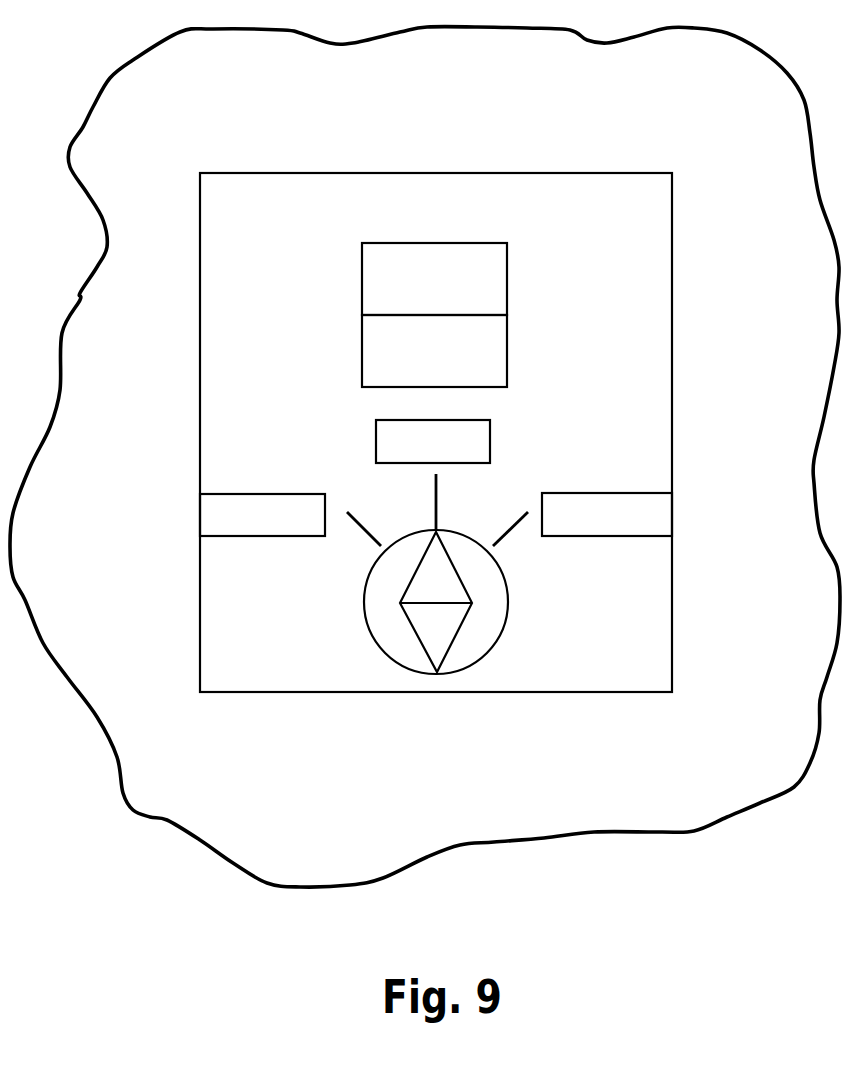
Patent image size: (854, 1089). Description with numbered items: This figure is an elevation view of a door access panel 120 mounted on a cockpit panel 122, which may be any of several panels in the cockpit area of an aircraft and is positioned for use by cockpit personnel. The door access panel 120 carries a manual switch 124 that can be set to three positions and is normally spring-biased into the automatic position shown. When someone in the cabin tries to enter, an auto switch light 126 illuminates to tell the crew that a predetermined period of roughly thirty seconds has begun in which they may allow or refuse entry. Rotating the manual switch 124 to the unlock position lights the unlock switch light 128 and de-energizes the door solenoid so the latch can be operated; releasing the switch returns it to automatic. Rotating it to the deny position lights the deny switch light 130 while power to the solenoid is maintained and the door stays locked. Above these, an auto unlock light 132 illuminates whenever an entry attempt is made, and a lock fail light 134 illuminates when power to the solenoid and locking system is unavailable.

The door access panel 120 is at (649, 630).
The cockpit panel 122 is at (193, 798).
The manual switch 124 is at (434, 644).
The auto switch light 126 is at (480, 438).
The unlock switch light 128 is at (218, 517).
The deny switch light 130 is at (649, 516).
The auto unlock light 132 is at (499, 277).
The lock fail light 134 is at (494, 354).